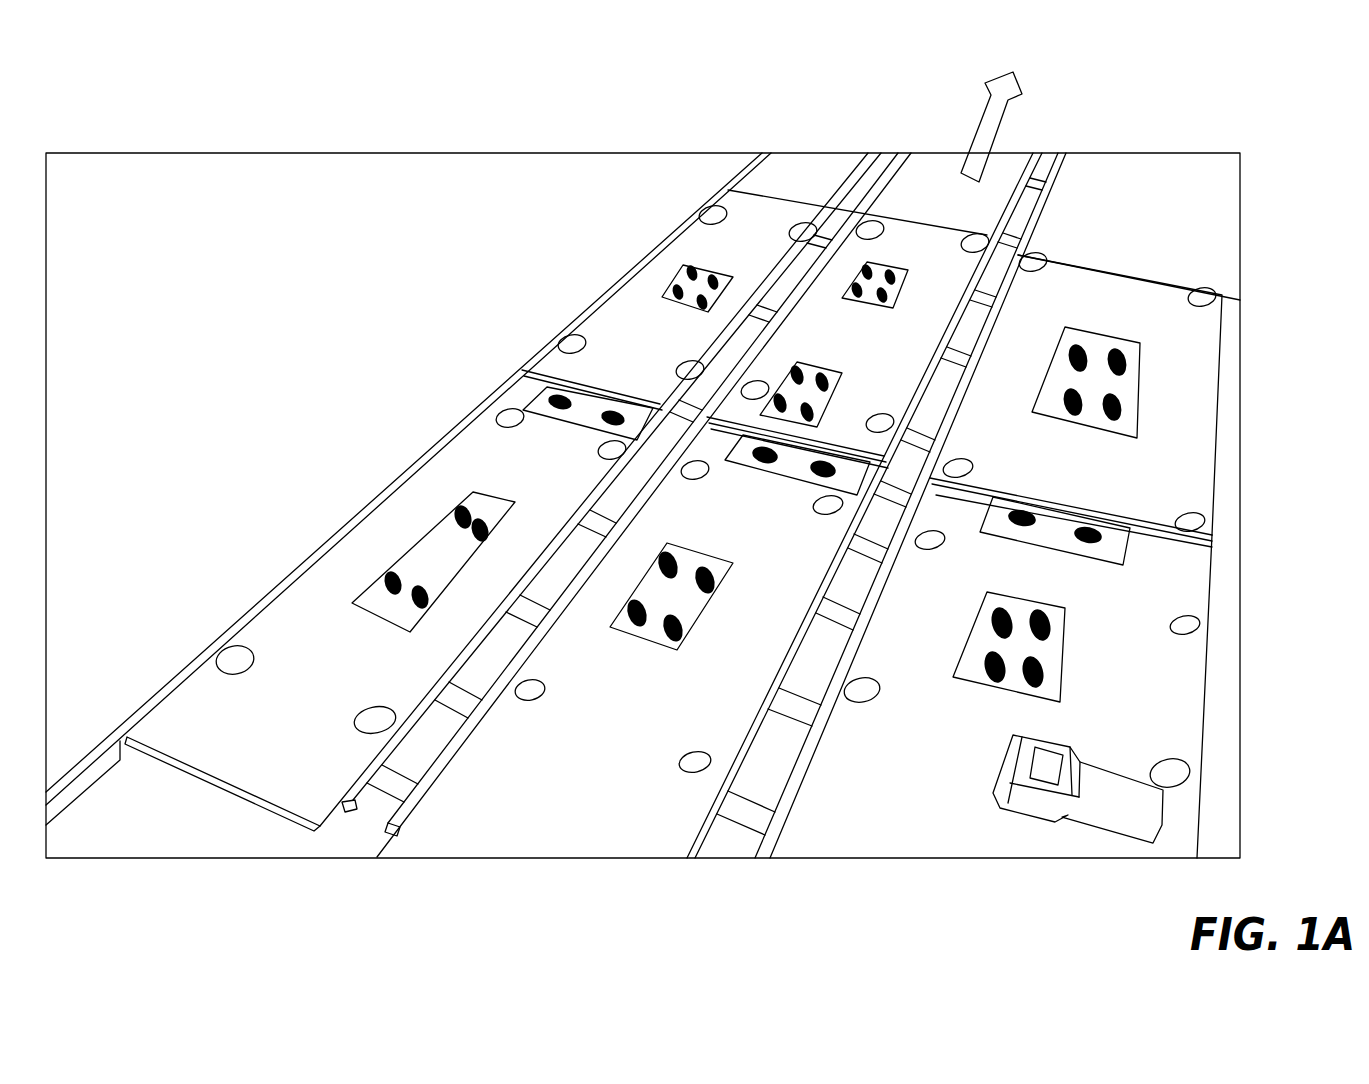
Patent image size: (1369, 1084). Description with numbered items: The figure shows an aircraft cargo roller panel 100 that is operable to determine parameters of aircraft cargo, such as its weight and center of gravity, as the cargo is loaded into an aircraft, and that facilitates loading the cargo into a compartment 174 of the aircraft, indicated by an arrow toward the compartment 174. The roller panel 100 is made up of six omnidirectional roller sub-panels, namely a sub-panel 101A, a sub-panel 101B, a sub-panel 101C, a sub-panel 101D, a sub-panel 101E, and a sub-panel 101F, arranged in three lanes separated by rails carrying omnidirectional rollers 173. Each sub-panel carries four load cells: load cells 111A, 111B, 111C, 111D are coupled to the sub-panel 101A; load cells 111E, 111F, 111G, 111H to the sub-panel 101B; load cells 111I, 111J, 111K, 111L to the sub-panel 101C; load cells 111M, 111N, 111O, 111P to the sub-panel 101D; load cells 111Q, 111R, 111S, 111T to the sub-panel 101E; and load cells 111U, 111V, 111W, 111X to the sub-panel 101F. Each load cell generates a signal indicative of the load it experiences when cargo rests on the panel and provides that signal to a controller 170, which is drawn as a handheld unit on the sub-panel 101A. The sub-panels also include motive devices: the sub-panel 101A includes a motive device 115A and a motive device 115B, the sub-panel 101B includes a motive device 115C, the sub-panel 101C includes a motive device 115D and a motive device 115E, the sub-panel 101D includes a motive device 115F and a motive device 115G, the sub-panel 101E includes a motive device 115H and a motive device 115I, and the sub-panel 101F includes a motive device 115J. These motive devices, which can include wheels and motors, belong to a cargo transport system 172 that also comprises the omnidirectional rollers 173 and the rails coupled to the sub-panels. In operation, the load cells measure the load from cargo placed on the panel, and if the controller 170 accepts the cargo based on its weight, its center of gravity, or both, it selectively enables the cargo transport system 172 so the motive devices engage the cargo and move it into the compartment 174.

The aircraft cargo roller panel 100 is at (643, 505).
The sub-panel 101A is at (1200, 710).
The sub-panel 101B is at (1205, 367).
The sub-panel 101C is at (580, 840).
The sub-panel 101D is at (922, 230).
The sub-panel 101E is at (405, 500).
The sub-panel 101F is at (755, 205).
The load cell 111A is at (1190, 773).
The load cell 111B is at (1200, 625).
The load cell 111C is at (862, 700).
The load cell 111D is at (932, 548).
The load cell 111E is at (1205, 522).
The load cell 111F is at (1210, 297).
The load cell 111G is at (970, 466).
The load cell 111H is at (1033, 270).
The load cell 111I is at (680, 762).
The load cell 111J is at (828, 513).
The load cell 111K is at (545, 690).
The load cell 111L is at (697, 478).
The load cell 111M is at (905, 395).
The load cell 111N is at (975, 240).
The load cell 111O is at (760, 385).
The load cell 111P is at (868, 225).
The load cell 111Q is at (375, 728).
The load cell 111R is at (614, 455).
The load cell 111S is at (235, 655).
The load cell 111T is at (503, 418).
The load cell 111U is at (690, 365).
The load cell 111V is at (803, 230).
The load cell 111W is at (572, 340).
The load cell 111X is at (712, 213).
The motive device 115A is at (1062, 655).
The motive device 115B is at (1090, 562).
The motive device 115C is at (1110, 333).
The motive device 115D is at (712, 598).
The motive device 115E is at (780, 485).
The motive device 115F is at (845, 370).
The motive device 115G is at (905, 282).
The motive device 115H is at (365, 590).
The motive device 115I is at (545, 392).
The motive device 115J is at (690, 272).
The controller 170 is at (1152, 833).
The cargo transport system 172 is at (1078, 330).
The omnidirectional rollers 173 is at (745, 820).
The compartment 174 is at (1000, 112).